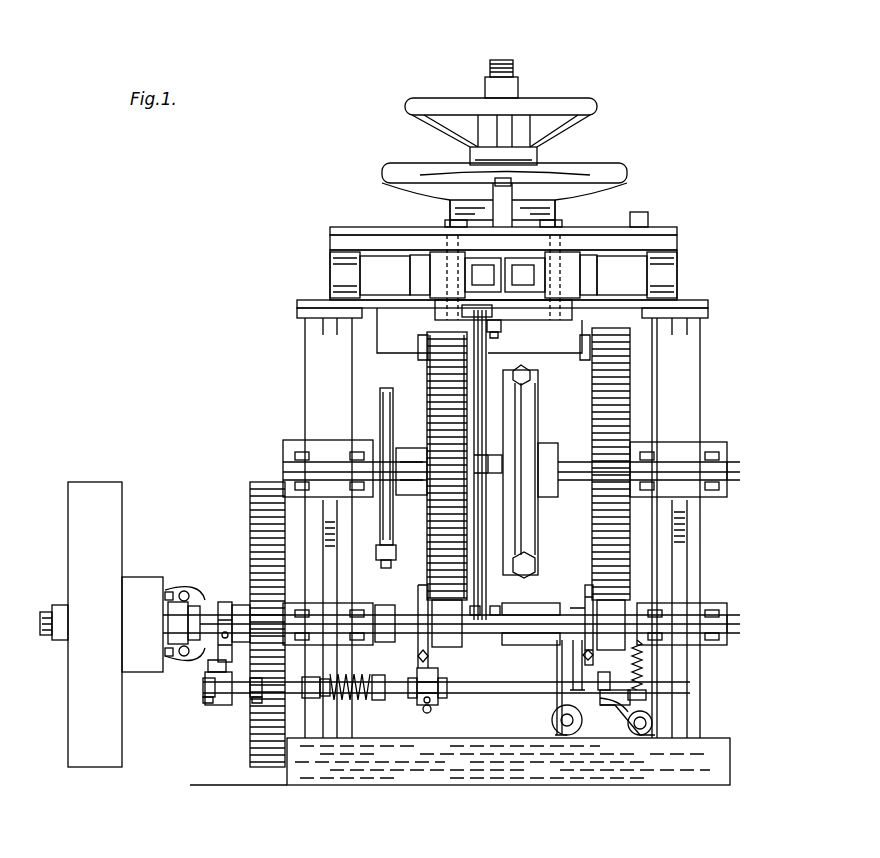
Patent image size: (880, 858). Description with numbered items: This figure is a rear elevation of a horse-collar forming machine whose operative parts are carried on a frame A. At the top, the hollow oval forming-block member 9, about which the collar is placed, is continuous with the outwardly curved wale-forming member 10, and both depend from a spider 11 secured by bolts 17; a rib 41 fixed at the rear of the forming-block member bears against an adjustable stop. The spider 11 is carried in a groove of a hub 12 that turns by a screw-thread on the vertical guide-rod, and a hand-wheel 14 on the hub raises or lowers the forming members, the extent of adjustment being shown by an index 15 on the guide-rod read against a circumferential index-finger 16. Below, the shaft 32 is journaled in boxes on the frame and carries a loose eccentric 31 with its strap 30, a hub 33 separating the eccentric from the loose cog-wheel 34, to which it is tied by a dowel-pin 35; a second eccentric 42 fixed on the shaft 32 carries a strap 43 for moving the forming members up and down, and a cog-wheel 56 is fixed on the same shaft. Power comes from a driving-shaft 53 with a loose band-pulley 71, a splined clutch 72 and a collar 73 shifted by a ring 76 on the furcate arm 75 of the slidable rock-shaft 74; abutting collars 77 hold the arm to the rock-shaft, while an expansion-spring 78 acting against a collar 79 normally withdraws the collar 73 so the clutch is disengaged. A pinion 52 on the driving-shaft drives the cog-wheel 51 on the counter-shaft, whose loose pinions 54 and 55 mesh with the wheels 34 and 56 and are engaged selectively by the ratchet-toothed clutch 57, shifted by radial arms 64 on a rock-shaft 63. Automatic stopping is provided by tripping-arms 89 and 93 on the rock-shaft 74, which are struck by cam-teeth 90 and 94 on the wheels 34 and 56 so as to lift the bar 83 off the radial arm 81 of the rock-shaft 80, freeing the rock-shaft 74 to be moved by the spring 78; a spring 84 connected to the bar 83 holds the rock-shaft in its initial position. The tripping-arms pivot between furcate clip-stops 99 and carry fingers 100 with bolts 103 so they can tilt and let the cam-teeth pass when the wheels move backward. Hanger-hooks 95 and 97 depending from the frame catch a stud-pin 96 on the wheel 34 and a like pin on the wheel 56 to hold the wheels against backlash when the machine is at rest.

The index 15 is at (503, 66).
The index-finger 16 is at (486, 88).
The hand-wheel 14 is at (566, 106).
The hub 12 is at (470, 153).
The spider 11 is at (568, 166).
The bolts 17 is at (520, 178).
The wale-forming member 10 is at (447, 190).
The rib 41 is at (504, 205).
The forming-block member 9 is at (556, 212).
The frame A is at (700, 413).
The hook-hanger 97 is at (640, 372).
The shaft 32 is at (566, 486).
The hub 33 is at (410, 452).
The strap 30 is at (383, 395).
The eccentric 31 is at (381, 418).
The cam-tooth 90 is at (430, 590).
The cog-wheel 34 is at (462, 567).
The pinion 54 is at (460, 640).
The cog-wheel 56 is at (592, 548).
The pinion 55 is at (609, 635).
The cog-wheel 51 is at (250, 520).
The pinion 52 is at (250, 606).
The hanger-hook 95 is at (482, 378).
The stud-pin 96 is at (495, 455).
The strap 43 is at (538, 392).
The eccentric 42 is at (538, 418).
The driving-shaft 53 is at (400, 615).
The clutch 57 is at (527, 604).
The cam-tooth 94 is at (585, 595).
The tripping-arm 89 is at (418, 650).
The fingers 100 is at (422, 706).
The clip-stops 99 is at (440, 698).
The bolts 103 is at (430, 711).
The rock-shaft 74 is at (480, 695).
The expansion-spring 78 is at (362, 700).
The collar 79 is at (384, 700).
The radial arms 64 is at (557, 660).
The tripping-arm 93 is at (573, 652).
The dowel-pin 35 is at (600, 659).
The spring 84 is at (632, 672).
The bar 83 is at (618, 705).
The rock-shaft 63 is at (552, 720).
The rock-shaft 80 is at (637, 735).
The radial arm 81 is at (612, 714).
The band-pulley 71 is at (92, 482).
The clutch 72 is at (163, 624).
The collar 73 is at (205, 650).
The ring 76 is at (222, 602).
The furcate arm 75 is at (207, 683).
The collars 77 is at (206, 698).